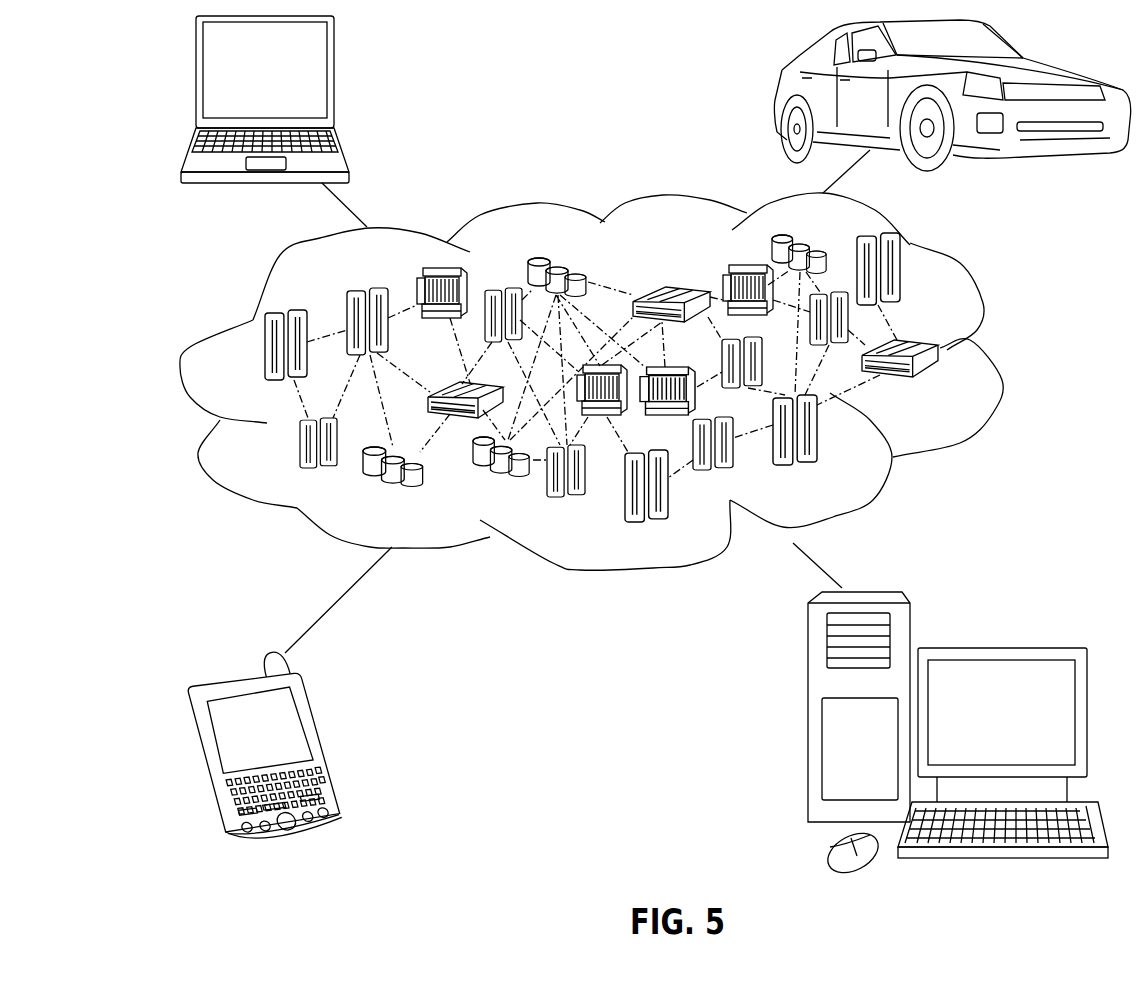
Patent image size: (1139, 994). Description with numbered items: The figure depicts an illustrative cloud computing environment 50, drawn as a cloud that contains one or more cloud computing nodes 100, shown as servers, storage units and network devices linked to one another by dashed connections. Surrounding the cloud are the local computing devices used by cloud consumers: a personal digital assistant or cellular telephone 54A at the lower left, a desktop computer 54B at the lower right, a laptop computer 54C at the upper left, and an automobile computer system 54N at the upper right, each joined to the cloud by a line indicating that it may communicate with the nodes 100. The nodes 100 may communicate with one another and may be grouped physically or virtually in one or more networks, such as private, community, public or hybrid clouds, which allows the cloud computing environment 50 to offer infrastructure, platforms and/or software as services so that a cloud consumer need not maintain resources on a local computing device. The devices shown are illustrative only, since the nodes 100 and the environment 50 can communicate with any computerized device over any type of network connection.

The cloud computing environment 50 is at (997, 356).
The cloud computing nodes 100 is at (950, 392).
The personal digital assistant (PDA) or cellular telephone 54A is at (327, 741).
The desktop computer 54B is at (999, 648).
The laptop computer 54C is at (337, 80).
The automobile computer system 54N is at (773, 97).